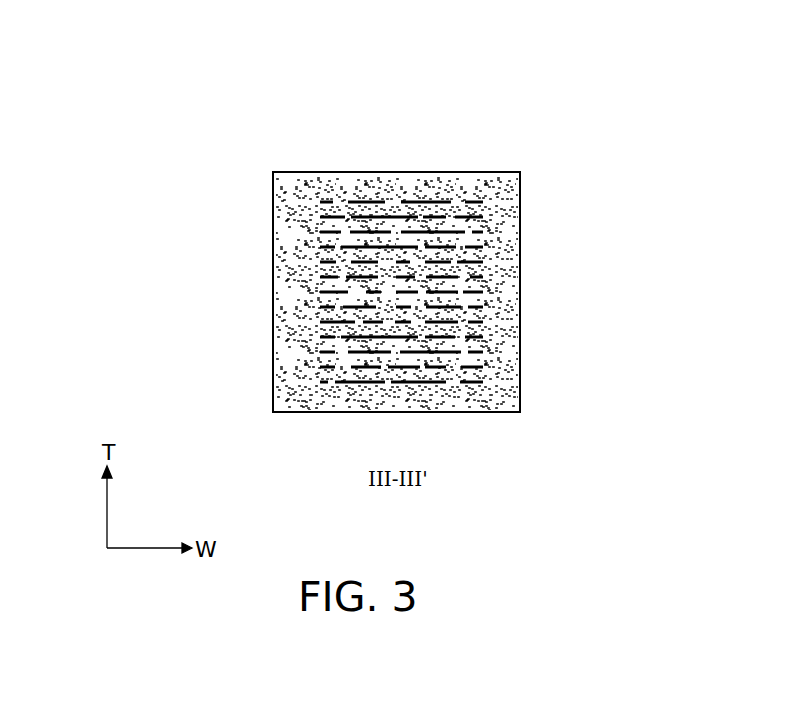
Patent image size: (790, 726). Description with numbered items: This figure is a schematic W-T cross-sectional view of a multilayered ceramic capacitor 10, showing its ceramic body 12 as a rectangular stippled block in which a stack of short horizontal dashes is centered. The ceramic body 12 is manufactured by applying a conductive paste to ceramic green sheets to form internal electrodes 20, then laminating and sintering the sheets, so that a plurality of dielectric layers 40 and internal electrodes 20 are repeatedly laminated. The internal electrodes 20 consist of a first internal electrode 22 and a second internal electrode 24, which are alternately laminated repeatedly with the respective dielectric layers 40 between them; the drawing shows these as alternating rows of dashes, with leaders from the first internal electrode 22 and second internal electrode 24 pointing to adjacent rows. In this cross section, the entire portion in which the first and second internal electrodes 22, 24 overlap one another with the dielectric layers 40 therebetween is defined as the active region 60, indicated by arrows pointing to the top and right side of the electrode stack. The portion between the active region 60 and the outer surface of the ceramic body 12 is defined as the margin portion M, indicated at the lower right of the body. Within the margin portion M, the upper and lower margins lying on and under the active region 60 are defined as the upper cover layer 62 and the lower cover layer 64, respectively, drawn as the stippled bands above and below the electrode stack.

The multilayered ceramic capacitor 10 is at (332, 37).
The ceramic body 12 is at (520, 240).
The internal electrodes 20 is at (323, 277).
The first internal electrode 22 is at (356, 203).
The second internal electrode 24 is at (338, 218).
The dielectric layers 40 is at (347, 246).
The active region 60 is at (400, 201).
The upper cover layer 62 is at (430, 182).
The lower cover layer 64 is at (300, 402).
The margin portion M is at (510, 393).